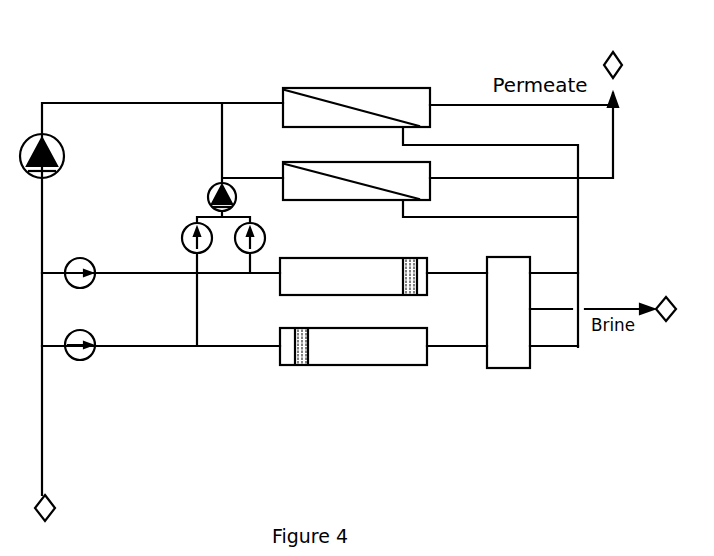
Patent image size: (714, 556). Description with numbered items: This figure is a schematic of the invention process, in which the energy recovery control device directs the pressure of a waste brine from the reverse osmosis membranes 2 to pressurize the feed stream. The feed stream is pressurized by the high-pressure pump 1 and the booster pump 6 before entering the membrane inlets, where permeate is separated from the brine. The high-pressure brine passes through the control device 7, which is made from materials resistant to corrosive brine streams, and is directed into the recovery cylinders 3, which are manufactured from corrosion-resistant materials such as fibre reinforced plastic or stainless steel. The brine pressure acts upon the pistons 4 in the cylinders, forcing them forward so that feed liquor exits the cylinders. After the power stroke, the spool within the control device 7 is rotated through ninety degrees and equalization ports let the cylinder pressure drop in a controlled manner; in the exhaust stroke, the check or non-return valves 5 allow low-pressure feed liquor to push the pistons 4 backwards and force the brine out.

The high-pressure pump 1 is at (53, 154).
The reverse osmosis membrane 2 is at (356, 144).
The recovery cylinder 3 is at (353, 311).
The piston 4 is at (350, 313).
The check valve 5 is at (165, 291).
The booster pump 6 is at (231, 197).
The control device 7 is at (508, 297).